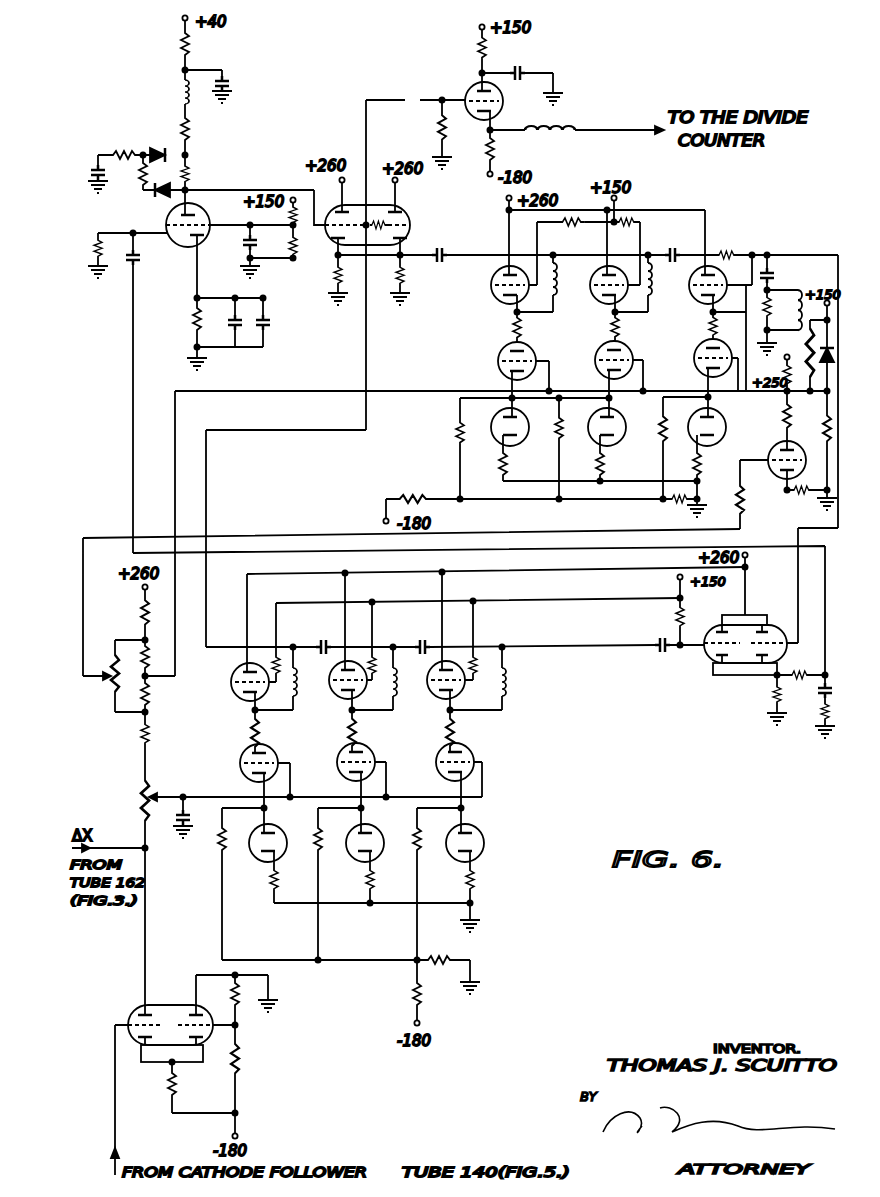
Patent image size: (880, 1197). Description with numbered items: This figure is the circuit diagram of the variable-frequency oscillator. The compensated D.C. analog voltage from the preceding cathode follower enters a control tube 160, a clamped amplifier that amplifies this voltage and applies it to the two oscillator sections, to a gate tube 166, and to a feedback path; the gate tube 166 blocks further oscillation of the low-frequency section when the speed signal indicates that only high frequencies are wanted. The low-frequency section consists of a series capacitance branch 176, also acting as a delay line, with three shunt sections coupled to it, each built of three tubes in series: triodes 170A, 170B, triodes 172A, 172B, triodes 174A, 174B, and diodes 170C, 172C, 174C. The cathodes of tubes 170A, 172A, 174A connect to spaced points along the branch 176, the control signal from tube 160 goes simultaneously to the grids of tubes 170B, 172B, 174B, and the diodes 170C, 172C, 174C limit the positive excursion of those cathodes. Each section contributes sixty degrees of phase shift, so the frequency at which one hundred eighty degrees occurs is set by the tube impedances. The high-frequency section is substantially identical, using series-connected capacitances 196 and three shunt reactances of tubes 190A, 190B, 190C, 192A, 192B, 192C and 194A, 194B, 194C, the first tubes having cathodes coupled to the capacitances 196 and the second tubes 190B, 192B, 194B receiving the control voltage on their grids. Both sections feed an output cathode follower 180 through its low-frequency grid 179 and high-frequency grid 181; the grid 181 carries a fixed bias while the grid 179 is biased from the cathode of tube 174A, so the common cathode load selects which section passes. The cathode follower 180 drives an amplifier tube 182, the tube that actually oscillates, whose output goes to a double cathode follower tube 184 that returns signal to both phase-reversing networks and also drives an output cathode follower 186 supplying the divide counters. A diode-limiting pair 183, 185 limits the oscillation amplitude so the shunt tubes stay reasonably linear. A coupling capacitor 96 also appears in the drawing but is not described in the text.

The coupling capacitor 96 is at (655, 638).
The control tube 160 is at (164, 1005).
The gate tube 166 is at (772, 452).
The shunt section tube 170A is at (493, 289).
The shunt section tube 170B is at (498, 361).
The diode 170C is at (527, 441).
The shunt section tube 172A is at (604, 303).
The shunt section tube 172B is at (596, 364).
The diode 172C is at (626, 433).
The shunt section tube 174A is at (693, 301).
The shunt section tube 174B is at (696, 354).
The diode 174C is at (723, 435).
The series capacitance branch 176 is at (578, 248).
The low-frequency grid 179 is at (782, 627).
The output cathode follower 180 is at (703, 664).
The high-frequency grid 181 is at (717, 624).
The amplifier tube 182 is at (165, 218).
The diode-limiting pair 183 is at (162, 148).
The double cathode follower tube 184 is at (410, 225).
The diode-limiting pair 185 is at (173, 187).
The output cathode follower 186 is at (466, 89).
The shunt variable reactance tube 190A is at (232, 689).
The shunt variable reactance tube 190B is at (240, 759).
The shunt variable reactance tube 190C is at (252, 860).
The shunt variable reactance tube 192A is at (328, 697).
The shunt variable reactance tube 192B is at (337, 761).
The shunt variable reactance tube 192C is at (349, 860).
The shunt variable reactance tube 194A is at (428, 697).
The shunt variable reactance tube 194B is at (437, 756).
The shunt variable reactance tube 194C is at (480, 836).
The series-connected capacitances 196 is at (317, 644).